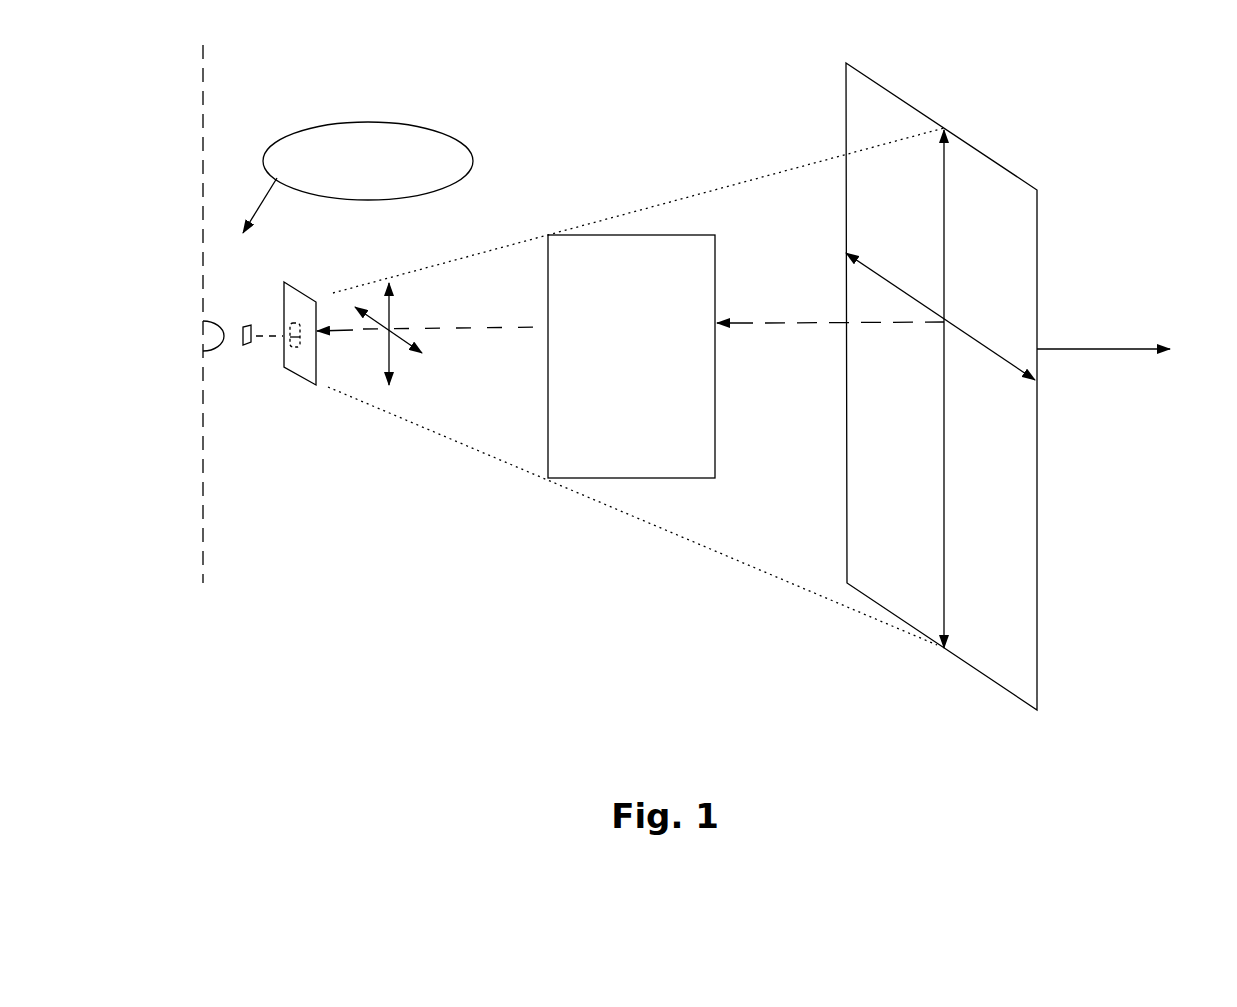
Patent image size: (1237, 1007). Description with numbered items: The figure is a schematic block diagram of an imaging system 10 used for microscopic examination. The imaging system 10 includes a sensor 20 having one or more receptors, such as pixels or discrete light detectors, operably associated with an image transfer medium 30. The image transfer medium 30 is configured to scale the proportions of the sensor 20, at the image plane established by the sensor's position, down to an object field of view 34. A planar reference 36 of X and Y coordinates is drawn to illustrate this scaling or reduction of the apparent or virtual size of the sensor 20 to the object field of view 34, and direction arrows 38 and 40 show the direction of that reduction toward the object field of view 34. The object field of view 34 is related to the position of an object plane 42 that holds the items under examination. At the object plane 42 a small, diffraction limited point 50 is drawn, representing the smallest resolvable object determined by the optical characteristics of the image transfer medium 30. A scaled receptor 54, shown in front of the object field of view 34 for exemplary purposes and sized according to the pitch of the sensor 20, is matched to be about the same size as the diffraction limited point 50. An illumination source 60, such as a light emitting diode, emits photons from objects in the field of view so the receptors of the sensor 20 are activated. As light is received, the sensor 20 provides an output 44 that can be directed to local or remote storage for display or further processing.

The imaging system 10 is at (1108, 115).
The sensor 20 is at (962, 142).
The image transfer medium 30 is at (715, 275).
The object field of view 34 is at (317, 272).
The planar reference 36 is at (423, 307).
The direction arrow 38 is at (745, 323).
The direction arrow 40 is at (463, 328).
The object plane 42 is at (203, 127).
The output 44 is at (1085, 349).
The diffraction limited point 50 is at (218, 312).
The scaled receptor 54 is at (253, 368).
The illumination source 60 is at (385, 122).